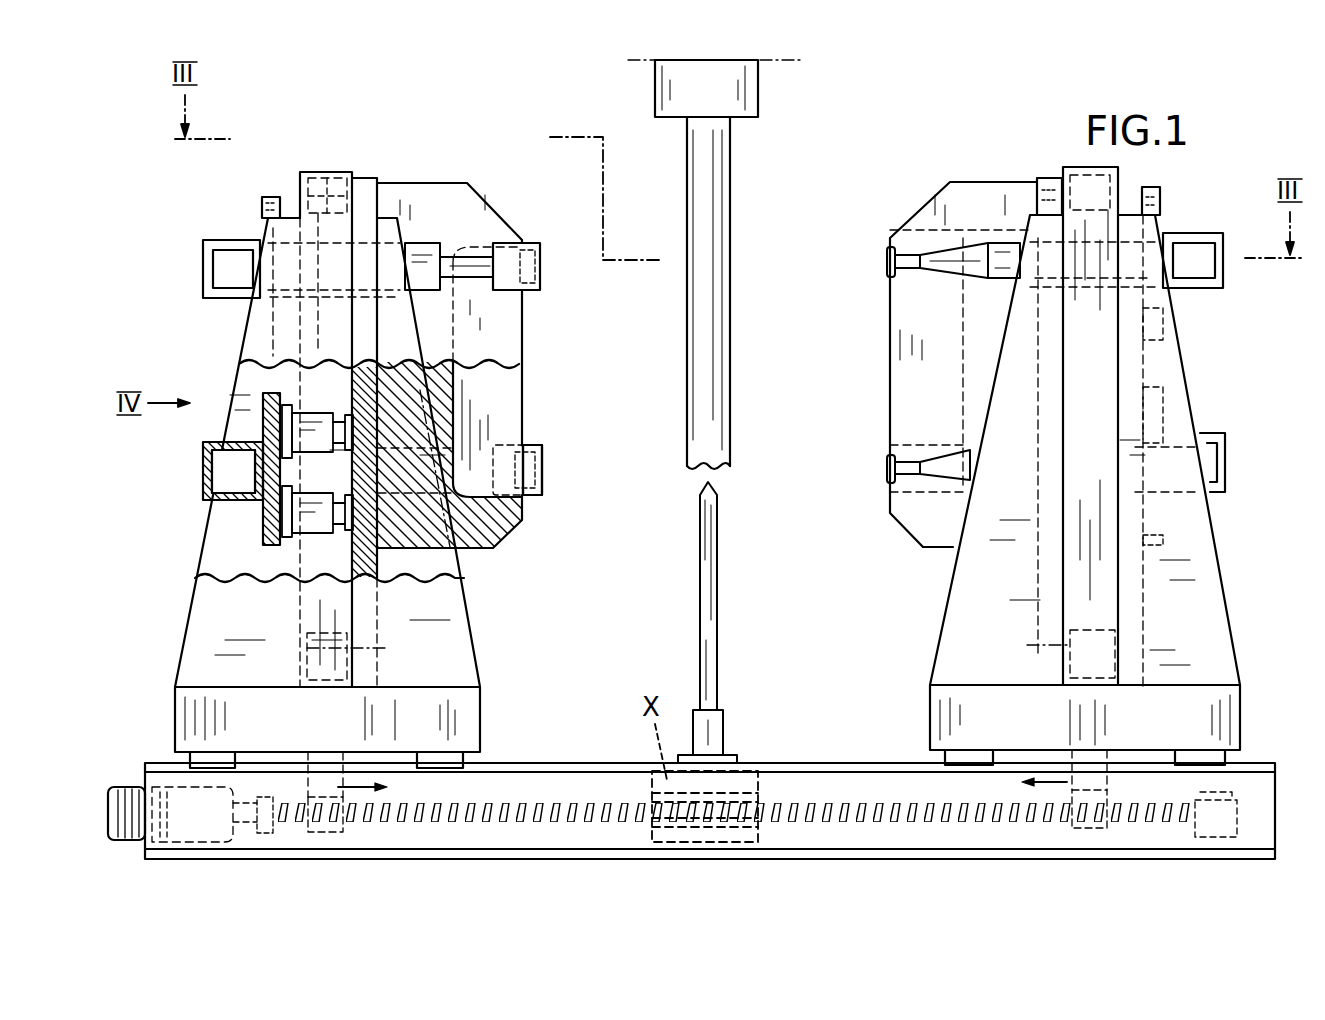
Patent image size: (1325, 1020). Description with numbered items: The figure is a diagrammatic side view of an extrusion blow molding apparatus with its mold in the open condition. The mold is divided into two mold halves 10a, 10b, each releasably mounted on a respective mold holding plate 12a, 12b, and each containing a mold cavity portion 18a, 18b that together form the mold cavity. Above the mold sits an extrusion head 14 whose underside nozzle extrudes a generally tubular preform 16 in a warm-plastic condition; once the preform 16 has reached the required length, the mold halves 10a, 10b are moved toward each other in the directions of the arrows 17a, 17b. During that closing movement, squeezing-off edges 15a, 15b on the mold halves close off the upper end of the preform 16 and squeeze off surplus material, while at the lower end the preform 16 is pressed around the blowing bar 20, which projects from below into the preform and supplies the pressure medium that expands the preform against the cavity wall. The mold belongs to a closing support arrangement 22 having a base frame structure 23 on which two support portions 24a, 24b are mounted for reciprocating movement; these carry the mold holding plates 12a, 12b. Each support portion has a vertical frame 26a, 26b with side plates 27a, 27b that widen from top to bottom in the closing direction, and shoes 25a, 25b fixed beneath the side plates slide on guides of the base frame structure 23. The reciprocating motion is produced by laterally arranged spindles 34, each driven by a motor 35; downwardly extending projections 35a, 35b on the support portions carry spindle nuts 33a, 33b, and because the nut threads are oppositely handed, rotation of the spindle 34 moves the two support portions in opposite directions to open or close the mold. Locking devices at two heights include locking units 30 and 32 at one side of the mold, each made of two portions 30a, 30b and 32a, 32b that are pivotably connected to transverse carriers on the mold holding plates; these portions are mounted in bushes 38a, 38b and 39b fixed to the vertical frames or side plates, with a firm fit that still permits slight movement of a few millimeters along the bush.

The mold half 10a is at (458, 224).
The mold half 10b is at (998, 222).
The mold holding plate 12a is at (365, 178).
The mold holding plate 12b is at (1058, 172).
The extrusion head 14 is at (760, 95).
The squeezing-off edge 15a is at (525, 242).
The squeezing-off edge 15b is at (890, 252).
The preform 16 is at (732, 207).
The arrow 17a is at (368, 790).
The arrow 17b is at (1050, 788).
The mold cavity portion 18a is at (513, 399).
The mold cavity portion 18b is at (946, 426).
The blowing mandrel or bar 20 is at (712, 545).
The closing support arrangement 22 is at (197, 214).
The base frame structure 23 is at (590, 861).
The support portion 24a is at (208, 349).
The support portion 24b is at (1212, 364).
The shoe 25a is at (470, 742).
The shoe 25b is at (955, 748).
The vertical frame 26a is at (300, 622).
The vertical frame 26b is at (1118, 655).
The side plate 27a is at (195, 535).
The side plate 27b is at (1215, 590).
The locking unit 30 is at (562, 301).
The locking unit portion 30a is at (480, 292).
The locking unit portion 30b is at (947, 292).
The locking unit 32 is at (556, 434).
The locking unit portion 32a is at (545, 490).
The locking unit portion 32b is at (897, 494).
The spindle nut 33a is at (317, 830).
The spindle nut 33b is at (1085, 830).
The spindle 34 is at (498, 846).
The motor 35 is at (132, 792).
The downwardly extending projection 35a is at (308, 775).
The downwardly extending projection 35b is at (1107, 775).
The bush 38a is at (292, 233).
The bush 38b is at (1116, 432).
The bush 39b is at (1137, 495).